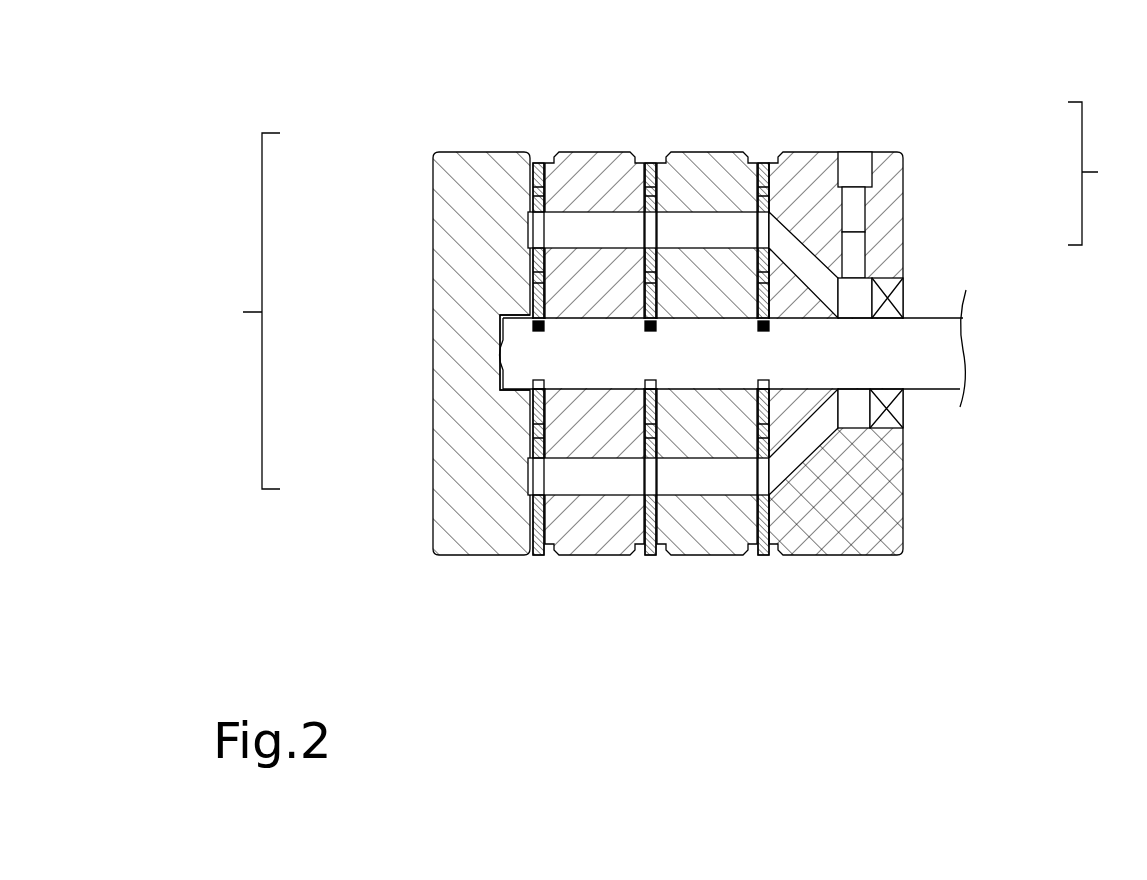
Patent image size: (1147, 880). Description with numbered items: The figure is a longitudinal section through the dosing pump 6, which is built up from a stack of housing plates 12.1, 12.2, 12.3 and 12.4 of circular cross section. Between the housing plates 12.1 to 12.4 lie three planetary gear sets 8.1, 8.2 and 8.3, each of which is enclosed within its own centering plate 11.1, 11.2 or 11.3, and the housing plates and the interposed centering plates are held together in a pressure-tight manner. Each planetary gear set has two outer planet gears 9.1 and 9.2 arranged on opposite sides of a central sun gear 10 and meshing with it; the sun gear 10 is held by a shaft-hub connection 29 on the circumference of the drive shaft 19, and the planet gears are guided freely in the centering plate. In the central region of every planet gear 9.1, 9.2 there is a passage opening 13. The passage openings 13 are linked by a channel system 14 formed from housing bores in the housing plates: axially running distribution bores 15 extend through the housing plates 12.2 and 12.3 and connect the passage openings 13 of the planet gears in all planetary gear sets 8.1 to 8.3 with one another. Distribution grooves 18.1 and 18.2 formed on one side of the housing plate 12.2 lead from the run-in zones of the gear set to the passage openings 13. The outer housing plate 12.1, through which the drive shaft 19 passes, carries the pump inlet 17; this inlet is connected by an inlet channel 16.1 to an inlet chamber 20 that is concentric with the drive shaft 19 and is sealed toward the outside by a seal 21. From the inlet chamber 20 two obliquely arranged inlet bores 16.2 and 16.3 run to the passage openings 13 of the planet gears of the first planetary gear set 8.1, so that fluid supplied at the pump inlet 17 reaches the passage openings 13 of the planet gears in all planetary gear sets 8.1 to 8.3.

The dosing pump 6 is at (472, 575).
The first planetary gear set 8.1 is at (905, 400).
The second planetary gear set 8.2 is at (700, 230).
The third planetary gear set 8.3 is at (233, 311).
The first planet gear 9.1 is at (800, 475).
The second planet gear 9.2 is at (858, 160).
The sun gear 10 is at (528, 405).
The first centering plate 11.1 is at (796, 168).
The second centering plate 11.2 is at (653, 167).
The third centering plate 11.3 is at (545, 168).
The outer housing plate 12.1 is at (800, 165).
The housing plate 12.2 is at (743, 260).
The housing plate 12.3 is at (567, 163).
The housing plate 12.4 is at (472, 167).
The passage opening 13 is at (530, 225).
The channel system 14 is at (1107, 173).
The distribution bore 15 is at (703, 230).
The inlet channel 16.1 is at (863, 208).
The first inlet bore 16.2 is at (853, 244).
The second inlet bore 16.3 is at (790, 485).
The pump inlet 17 is at (890, 152).
The first distribution groove 18.1 is at (763, 162).
The second distribution groove 18.2 is at (532, 478).
The drive shaft 19 is at (943, 368).
The inlet chamber 20 is at (887, 288).
The seal 21 is at (963, 333).
The shaft-hub connection 29 is at (885, 410).